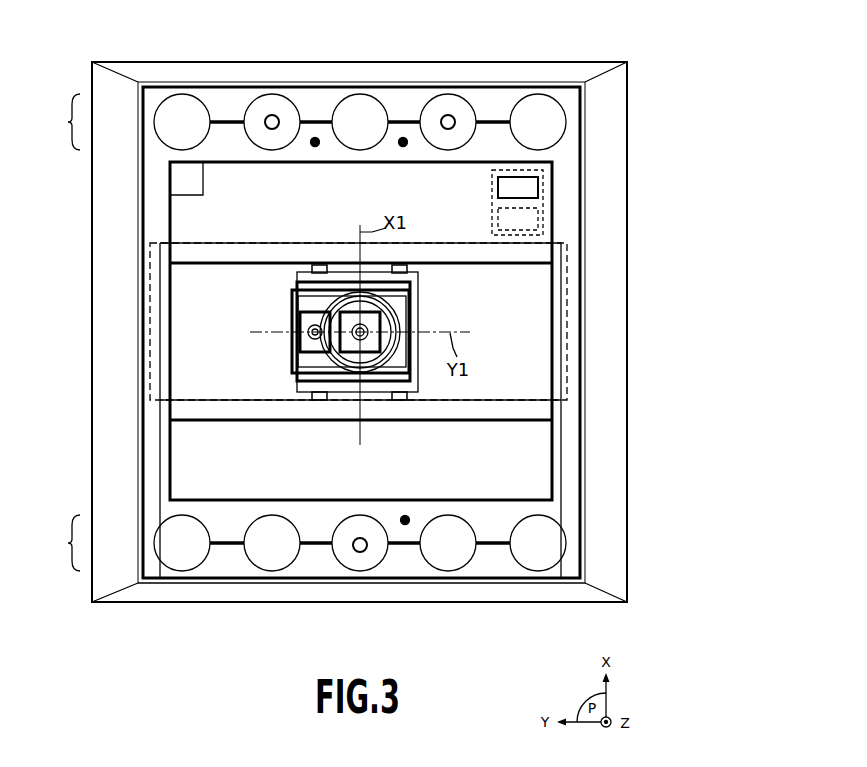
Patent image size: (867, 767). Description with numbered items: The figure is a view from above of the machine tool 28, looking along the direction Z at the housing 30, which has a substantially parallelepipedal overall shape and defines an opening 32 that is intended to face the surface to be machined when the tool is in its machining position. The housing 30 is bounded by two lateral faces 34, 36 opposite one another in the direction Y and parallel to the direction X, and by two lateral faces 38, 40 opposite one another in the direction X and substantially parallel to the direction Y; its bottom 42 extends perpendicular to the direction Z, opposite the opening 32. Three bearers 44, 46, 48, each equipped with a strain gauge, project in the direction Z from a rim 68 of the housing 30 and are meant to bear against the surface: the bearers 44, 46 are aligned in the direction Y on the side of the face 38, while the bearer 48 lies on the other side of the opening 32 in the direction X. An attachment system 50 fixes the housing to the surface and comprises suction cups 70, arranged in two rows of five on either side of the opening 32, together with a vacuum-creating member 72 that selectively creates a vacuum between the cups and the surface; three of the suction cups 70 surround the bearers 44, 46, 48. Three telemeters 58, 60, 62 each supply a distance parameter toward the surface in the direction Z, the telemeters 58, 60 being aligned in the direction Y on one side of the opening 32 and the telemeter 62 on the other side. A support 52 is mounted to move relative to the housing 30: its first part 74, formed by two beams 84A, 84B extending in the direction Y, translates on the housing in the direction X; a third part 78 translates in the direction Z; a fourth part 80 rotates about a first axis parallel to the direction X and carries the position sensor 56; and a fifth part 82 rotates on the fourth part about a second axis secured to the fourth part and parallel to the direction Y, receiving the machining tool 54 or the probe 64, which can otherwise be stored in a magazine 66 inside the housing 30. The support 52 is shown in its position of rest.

The machine tool 28 is at (657, 96).
The housing 30 is at (607, 235).
The opening 32 is at (200, 354).
The lateral face 34 is at (112, 446).
The lateral face 36 is at (607, 422).
The lateral face 38 is at (305, 73).
The lateral face 40 is at (305, 592).
The bottom 42 is at (358, 321).
The bearer 44 is at (267, 117).
The bearer 46 is at (452, 113).
The bearer 48 is at (357, 553).
The attachment system 50 is at (60, 332).
The support 52 is at (432, 307).
The machining tool 54 is at (372, 372).
The position sensor 56 is at (297, 348).
The telemeter 58 is at (315, 135).
The telemeter 60 is at (405, 135).
The telemeter 62 is at (405, 525).
The probe 64 is at (543, 183).
The magazine 66 is at (492, 208).
The rim 68 is at (493, 133).
The suction cups 70 is at (173, 100).
The vacuum-creating member 72 is at (181, 179).
The first part 74 is at (543, 400).
The third part 78 is at (340, 272).
The fourth part 80 is at (322, 360).
The fifth part 82 is at (347, 362).
The beam 84A is at (513, 427).
The beam 84B is at (513, 257).